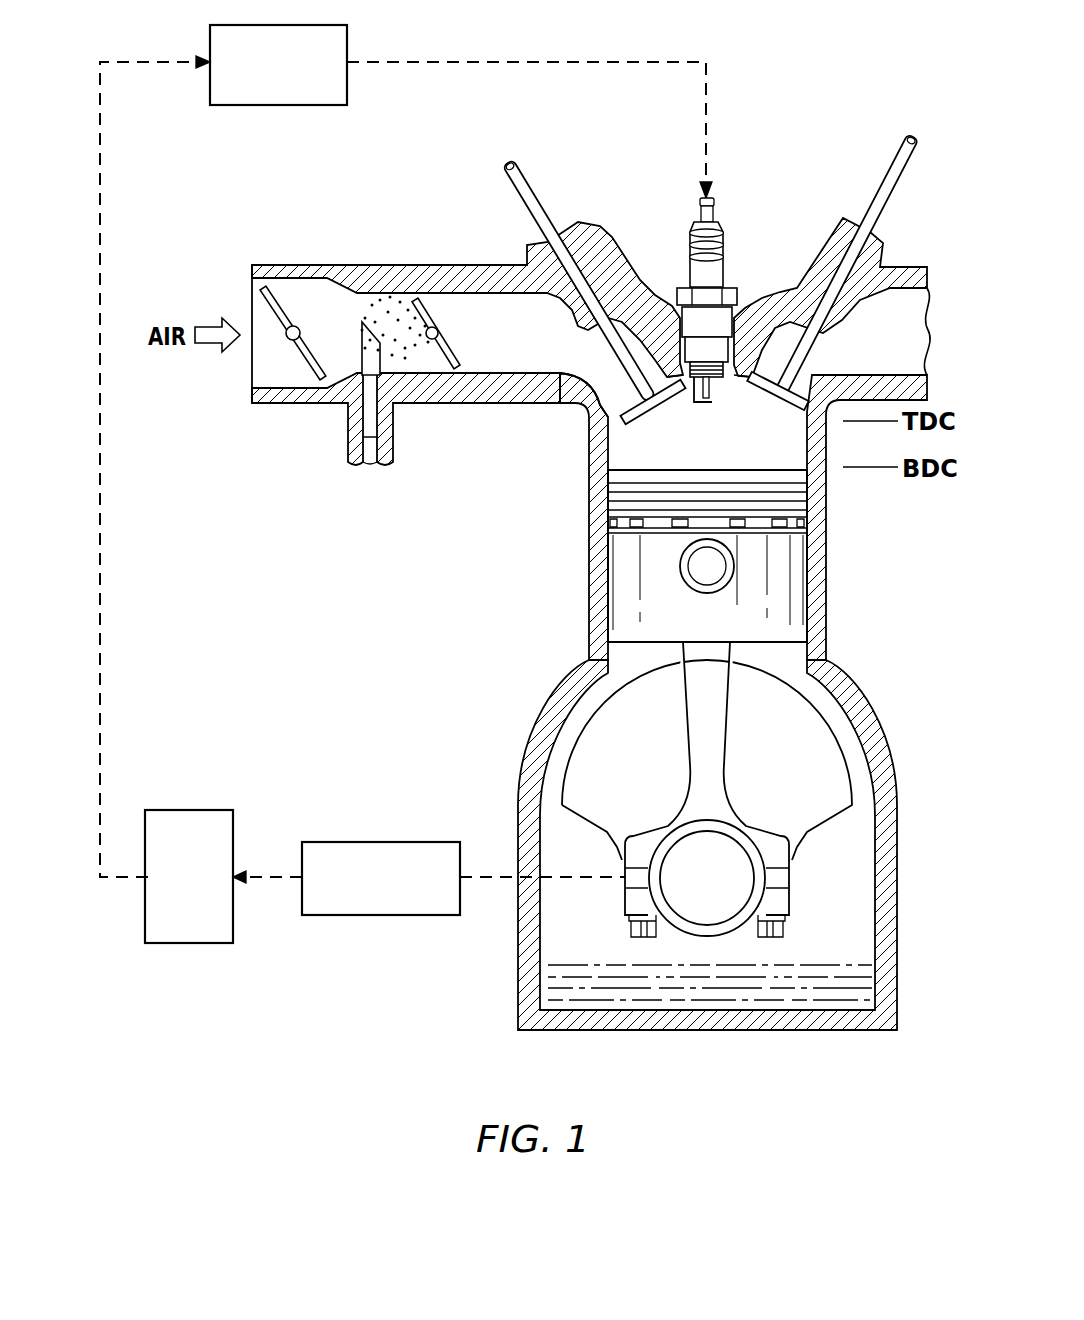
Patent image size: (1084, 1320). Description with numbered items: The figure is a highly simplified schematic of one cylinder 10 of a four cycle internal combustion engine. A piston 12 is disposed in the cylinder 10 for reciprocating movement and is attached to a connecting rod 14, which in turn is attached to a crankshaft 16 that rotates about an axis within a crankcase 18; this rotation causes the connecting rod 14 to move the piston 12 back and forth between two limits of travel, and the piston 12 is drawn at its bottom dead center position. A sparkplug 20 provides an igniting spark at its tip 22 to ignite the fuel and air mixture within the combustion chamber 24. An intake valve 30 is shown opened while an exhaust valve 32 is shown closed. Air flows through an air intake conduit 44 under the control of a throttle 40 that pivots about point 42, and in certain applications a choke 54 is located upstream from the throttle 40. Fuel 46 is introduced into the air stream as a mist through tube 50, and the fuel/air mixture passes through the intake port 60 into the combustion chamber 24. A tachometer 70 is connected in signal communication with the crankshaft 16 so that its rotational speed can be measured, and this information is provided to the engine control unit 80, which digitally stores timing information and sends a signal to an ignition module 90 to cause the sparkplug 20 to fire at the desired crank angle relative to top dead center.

The cylinder 10 is at (612, 456).
The piston 12 is at (797, 572).
The connecting rod 14 is at (717, 726).
The crankshaft 16 is at (822, 806).
The crankcase 18 is at (860, 895).
The sparkplug 20 is at (718, 276).
The tip 22 is at (712, 399).
The combustion chamber 24 is at (783, 443).
The intake valve 30 is at (523, 193).
The exhaust valve 32 is at (885, 194).
The throttle 40 is at (458, 351).
The point 42 is at (440, 333).
The air intake conduit 44 is at (535, 350).
The fuel 46 is at (392, 300).
The tube 50 is at (370, 422).
The choke 54 is at (291, 310).
The intake port 60 is at (583, 412).
The tachometer 70 is at (390, 915).
The engine control unit 80 is at (205, 811).
The ignition module 90 is at (285, 106).